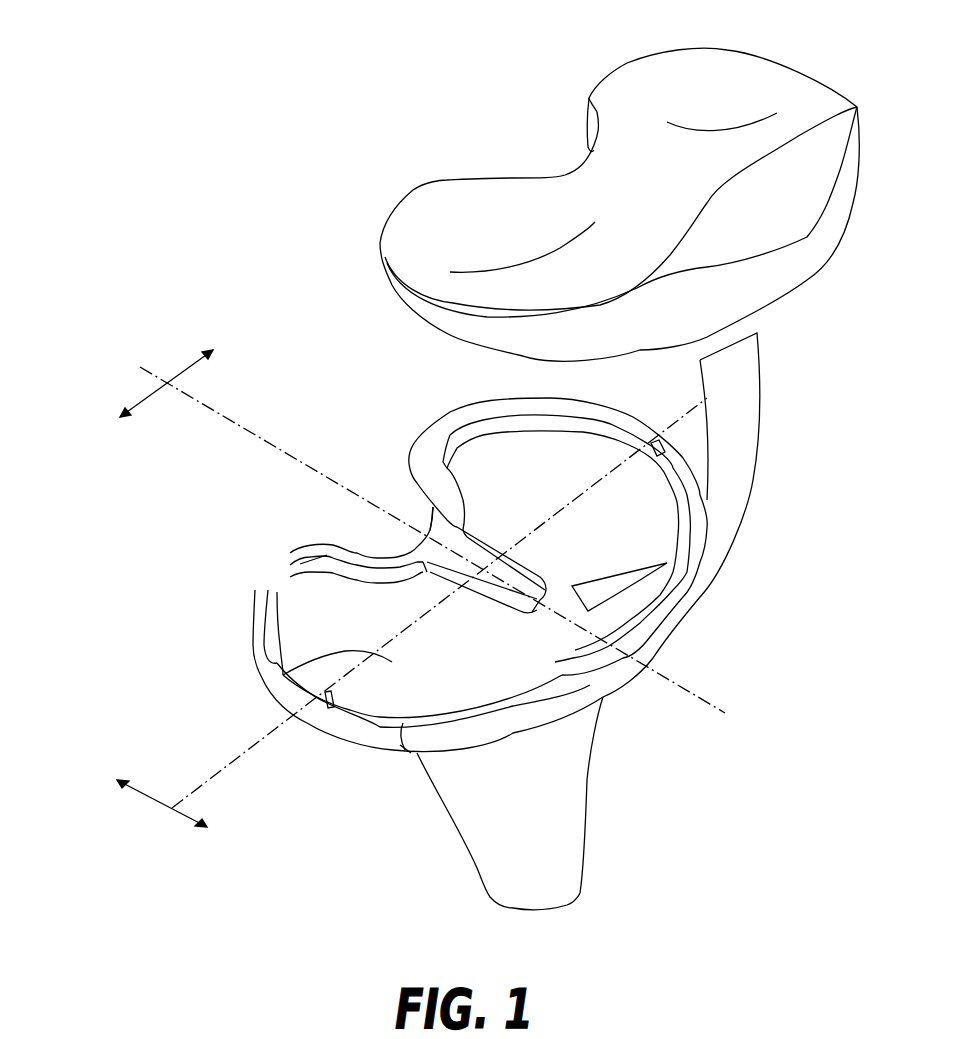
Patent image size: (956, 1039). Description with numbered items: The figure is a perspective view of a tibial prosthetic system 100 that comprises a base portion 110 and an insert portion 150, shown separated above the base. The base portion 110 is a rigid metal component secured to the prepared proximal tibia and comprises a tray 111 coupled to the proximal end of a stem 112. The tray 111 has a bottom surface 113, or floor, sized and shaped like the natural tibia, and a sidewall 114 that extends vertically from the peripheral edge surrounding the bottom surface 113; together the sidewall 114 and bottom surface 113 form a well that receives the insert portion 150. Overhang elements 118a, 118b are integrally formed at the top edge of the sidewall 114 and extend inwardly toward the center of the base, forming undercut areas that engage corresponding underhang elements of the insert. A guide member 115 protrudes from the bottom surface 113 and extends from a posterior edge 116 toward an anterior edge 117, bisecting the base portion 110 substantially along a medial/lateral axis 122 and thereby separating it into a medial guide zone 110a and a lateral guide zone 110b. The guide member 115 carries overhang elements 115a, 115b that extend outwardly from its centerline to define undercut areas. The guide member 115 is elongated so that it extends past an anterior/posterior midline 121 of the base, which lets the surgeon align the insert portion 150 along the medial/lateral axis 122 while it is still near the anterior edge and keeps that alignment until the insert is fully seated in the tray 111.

The tibial prosthetic system 100 is at (176, 59).
The base portion 110 is at (138, 631).
The medial guide zone 110a is at (582, 457).
The lateral guide zone 110b is at (313, 667).
The tray 111 is at (405, 750).
The stem 112 is at (570, 810).
The bottom surface 113 is at (648, 678).
The sidewall 114 is at (342, 727).
The guide member 115 is at (513, 572).
The overhang element 115a is at (492, 605).
The overhang element 115b is at (533, 575).
The posterior edge 116 is at (430, 527).
The anterior edge 117 is at (687, 623).
The overhang element 118a is at (263, 580).
The overhang element 118b is at (467, 420).
The anterior/posterior midline 121 is at (683, 423).
The medial/lateral axis 122 is at (140, 367).
The insert portion 150 is at (728, 53).